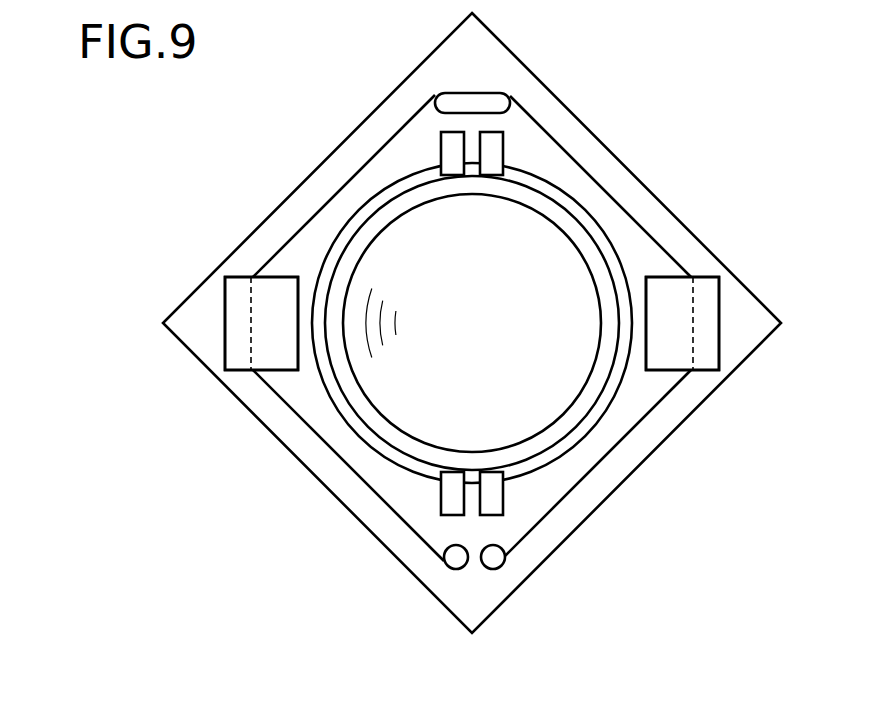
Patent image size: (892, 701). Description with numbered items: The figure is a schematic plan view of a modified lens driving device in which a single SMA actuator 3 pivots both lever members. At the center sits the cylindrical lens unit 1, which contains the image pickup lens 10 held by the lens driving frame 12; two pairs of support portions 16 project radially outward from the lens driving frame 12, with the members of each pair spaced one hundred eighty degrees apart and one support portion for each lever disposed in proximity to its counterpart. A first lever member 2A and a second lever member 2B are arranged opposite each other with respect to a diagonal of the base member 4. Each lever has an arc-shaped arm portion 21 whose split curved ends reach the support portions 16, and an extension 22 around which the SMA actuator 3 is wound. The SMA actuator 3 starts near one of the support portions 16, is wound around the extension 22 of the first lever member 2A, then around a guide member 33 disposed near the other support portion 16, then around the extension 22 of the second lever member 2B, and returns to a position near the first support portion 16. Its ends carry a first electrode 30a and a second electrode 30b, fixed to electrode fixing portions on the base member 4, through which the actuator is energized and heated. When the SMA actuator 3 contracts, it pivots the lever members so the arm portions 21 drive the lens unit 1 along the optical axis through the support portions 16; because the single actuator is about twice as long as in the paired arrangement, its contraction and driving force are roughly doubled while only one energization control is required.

The lens unit 1 is at (530, 308).
The SMA actuator 3 is at (618, 448).
The base member 4 is at (393, 115).
The image pickup lens 10 is at (558, 272).
The lens driving frame 12 is at (570, 218).
The support portions 16 is at (453, 153).
The arm portion 21 is at (322, 435).
The extension 22 is at (278, 356).
The first lever member 2A is at (201, 439).
The second lever member 2B is at (738, 416).
The first electrode 30a is at (493, 569).
The second electrode 30b is at (456, 569).
The guide member 33 is at (472, 98).